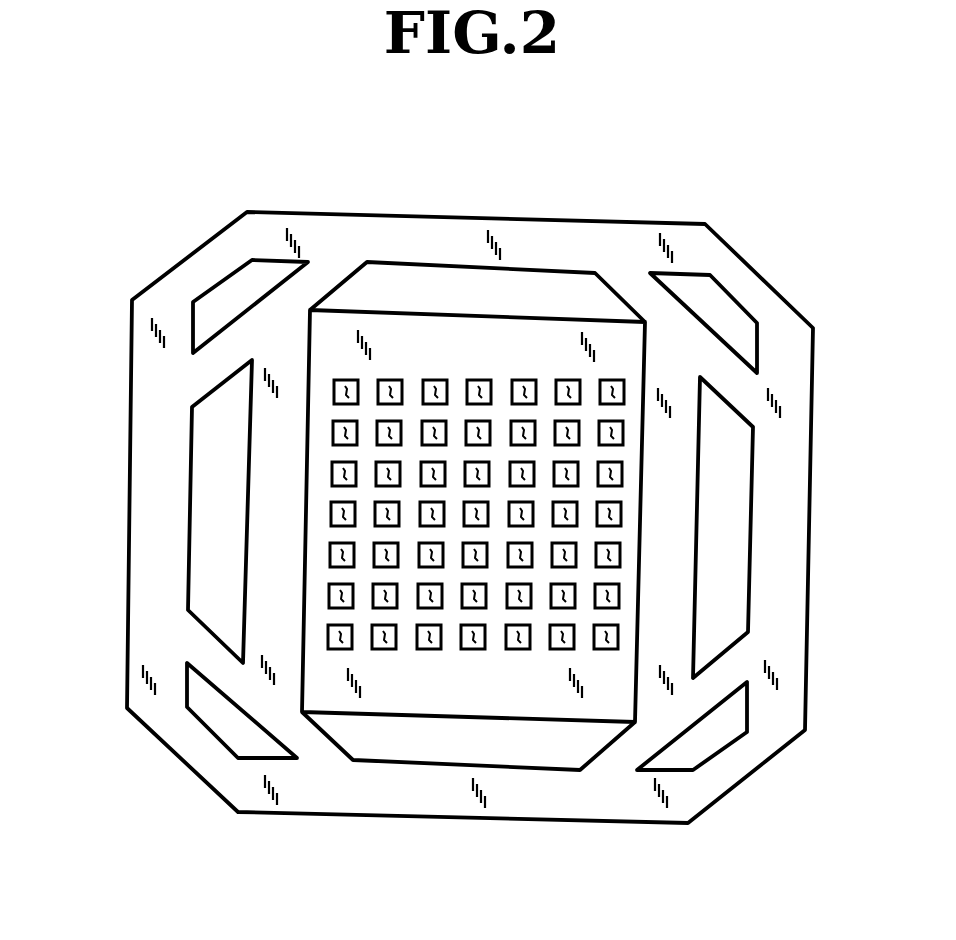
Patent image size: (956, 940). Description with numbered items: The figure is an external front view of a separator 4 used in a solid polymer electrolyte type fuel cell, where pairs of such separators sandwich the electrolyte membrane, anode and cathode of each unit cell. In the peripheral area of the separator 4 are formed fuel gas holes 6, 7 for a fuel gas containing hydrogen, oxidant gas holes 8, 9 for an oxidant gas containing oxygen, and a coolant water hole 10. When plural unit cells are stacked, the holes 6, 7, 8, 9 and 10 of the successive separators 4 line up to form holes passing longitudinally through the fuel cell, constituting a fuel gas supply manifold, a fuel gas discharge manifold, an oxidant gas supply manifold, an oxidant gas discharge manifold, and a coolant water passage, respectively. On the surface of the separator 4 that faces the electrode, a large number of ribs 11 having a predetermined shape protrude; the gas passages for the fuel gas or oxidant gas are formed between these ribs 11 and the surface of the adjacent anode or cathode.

The separator 4 is at (675, 220).
The fuel gas hole 6 is at (467, 283).
The fuel gas hole 7 is at (458, 760).
The oxidant gas hole 8 is at (202, 500).
The oxidant gas hole 9 is at (727, 522).
The coolant water hole 10 is at (222, 288).
The rib 11 is at (330, 553).